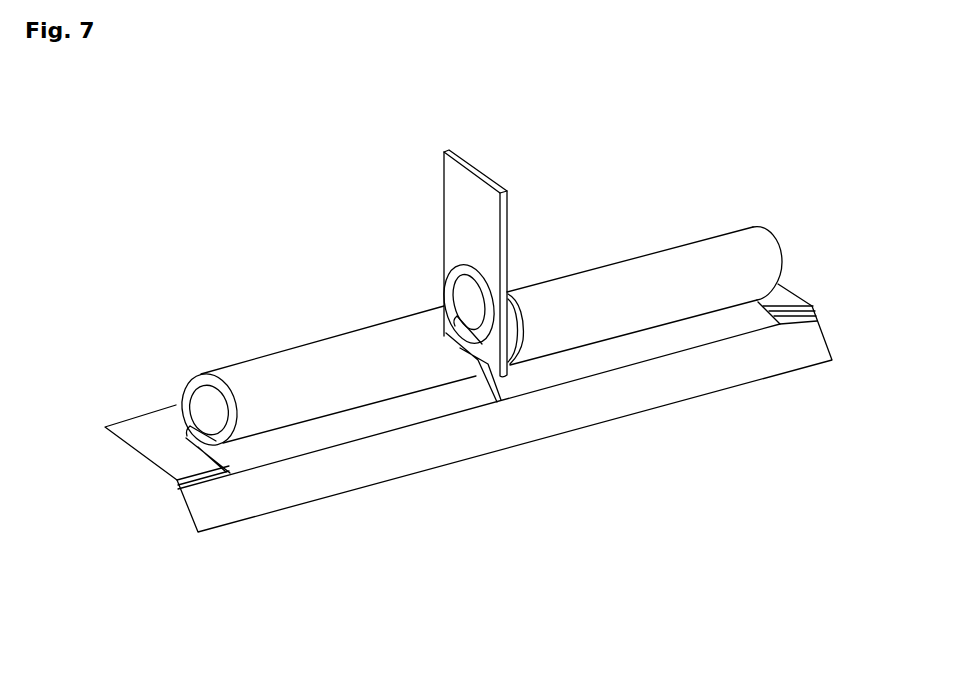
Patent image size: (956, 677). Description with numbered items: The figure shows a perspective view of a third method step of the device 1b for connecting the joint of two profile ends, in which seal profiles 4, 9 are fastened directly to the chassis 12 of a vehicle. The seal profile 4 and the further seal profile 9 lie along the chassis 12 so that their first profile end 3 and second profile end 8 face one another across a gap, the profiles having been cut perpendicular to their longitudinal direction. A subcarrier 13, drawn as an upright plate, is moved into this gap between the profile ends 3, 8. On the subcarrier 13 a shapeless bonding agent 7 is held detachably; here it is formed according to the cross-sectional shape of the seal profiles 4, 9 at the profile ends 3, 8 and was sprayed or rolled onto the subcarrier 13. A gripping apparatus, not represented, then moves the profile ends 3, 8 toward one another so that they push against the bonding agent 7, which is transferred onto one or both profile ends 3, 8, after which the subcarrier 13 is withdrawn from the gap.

The device for connecting the joint of two profile ends 1b is at (812, 138).
The first profile end 3 is at (513, 293).
The seal profile 4 is at (750, 245).
The bonding agent 7 is at (443, 270).
The second profile end 8 is at (444, 308).
The further seal profile 9 is at (257, 378).
The chassis 12 is at (207, 517).
The subcarrier 13 is at (470, 183).